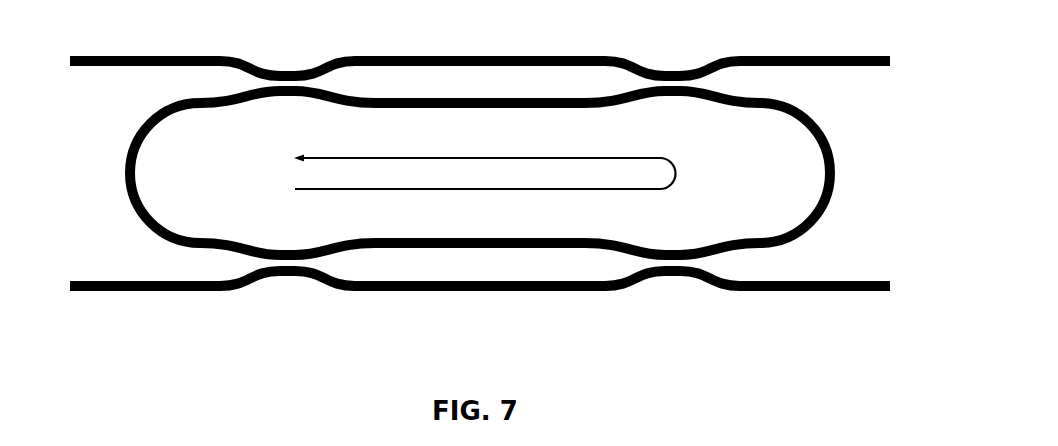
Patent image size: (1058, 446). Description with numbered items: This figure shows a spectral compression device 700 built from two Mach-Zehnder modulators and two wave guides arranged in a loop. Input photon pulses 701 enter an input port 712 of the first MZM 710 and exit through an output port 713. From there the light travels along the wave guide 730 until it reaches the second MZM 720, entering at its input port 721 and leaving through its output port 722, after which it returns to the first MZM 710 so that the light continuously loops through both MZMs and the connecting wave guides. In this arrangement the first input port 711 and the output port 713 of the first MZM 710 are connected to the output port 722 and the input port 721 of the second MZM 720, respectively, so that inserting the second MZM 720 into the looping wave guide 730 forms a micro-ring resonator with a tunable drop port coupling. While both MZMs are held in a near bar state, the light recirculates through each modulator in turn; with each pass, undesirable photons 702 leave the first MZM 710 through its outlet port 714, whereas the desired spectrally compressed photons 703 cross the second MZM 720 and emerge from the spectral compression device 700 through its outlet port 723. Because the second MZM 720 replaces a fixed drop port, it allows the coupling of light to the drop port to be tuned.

The spectral compression device 700 is at (864, 131).
The input photon pulses 701 is at (317, 277).
The undesirable photons 702 is at (835, 285).
The spectrally compressed photons 703 is at (462, 55).
The first MZM 710 is at (480, 259).
The first input port 711 is at (225, 234).
The input port 712 is at (223, 291).
The output port 713 is at (737, 233).
The outlet port 714 is at (724, 288).
The second MZM 720 is at (480, 87).
The input port 721 is at (723, 112).
The output port 722 is at (233, 114).
The outlet port 723 is at (239, 54).
The wave guide 730 is at (142, 170).